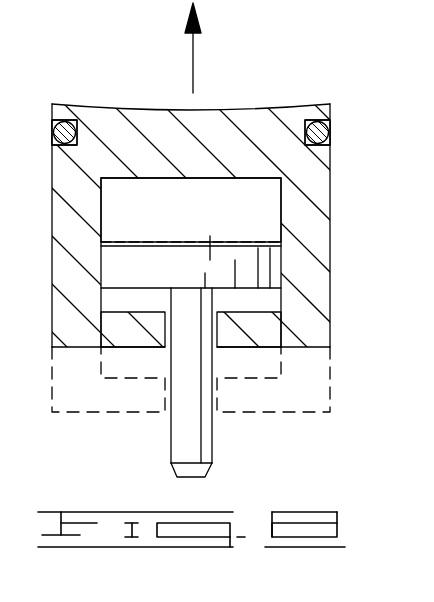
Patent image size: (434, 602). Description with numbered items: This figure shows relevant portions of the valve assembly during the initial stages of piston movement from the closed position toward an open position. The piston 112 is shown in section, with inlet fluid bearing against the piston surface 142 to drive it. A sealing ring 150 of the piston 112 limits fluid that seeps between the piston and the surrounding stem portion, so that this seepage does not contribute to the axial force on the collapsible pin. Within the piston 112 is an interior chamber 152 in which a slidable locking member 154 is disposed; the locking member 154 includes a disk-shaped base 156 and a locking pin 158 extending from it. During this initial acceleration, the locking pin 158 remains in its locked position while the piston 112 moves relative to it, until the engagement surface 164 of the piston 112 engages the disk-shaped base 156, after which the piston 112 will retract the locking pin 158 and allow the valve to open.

The piston 112 is at (191, 131).
The sealing ring 150 is at (317, 121).
The interior chamber 152 is at (171, 196).
The locking member 154 is at (152, 267).
The disk-shaped base 156 is at (210, 236).
The locking pin 158 is at (195, 438).
The engagement surface 164 is at (248, 310).
The piston surface 142 is at (78, 349).